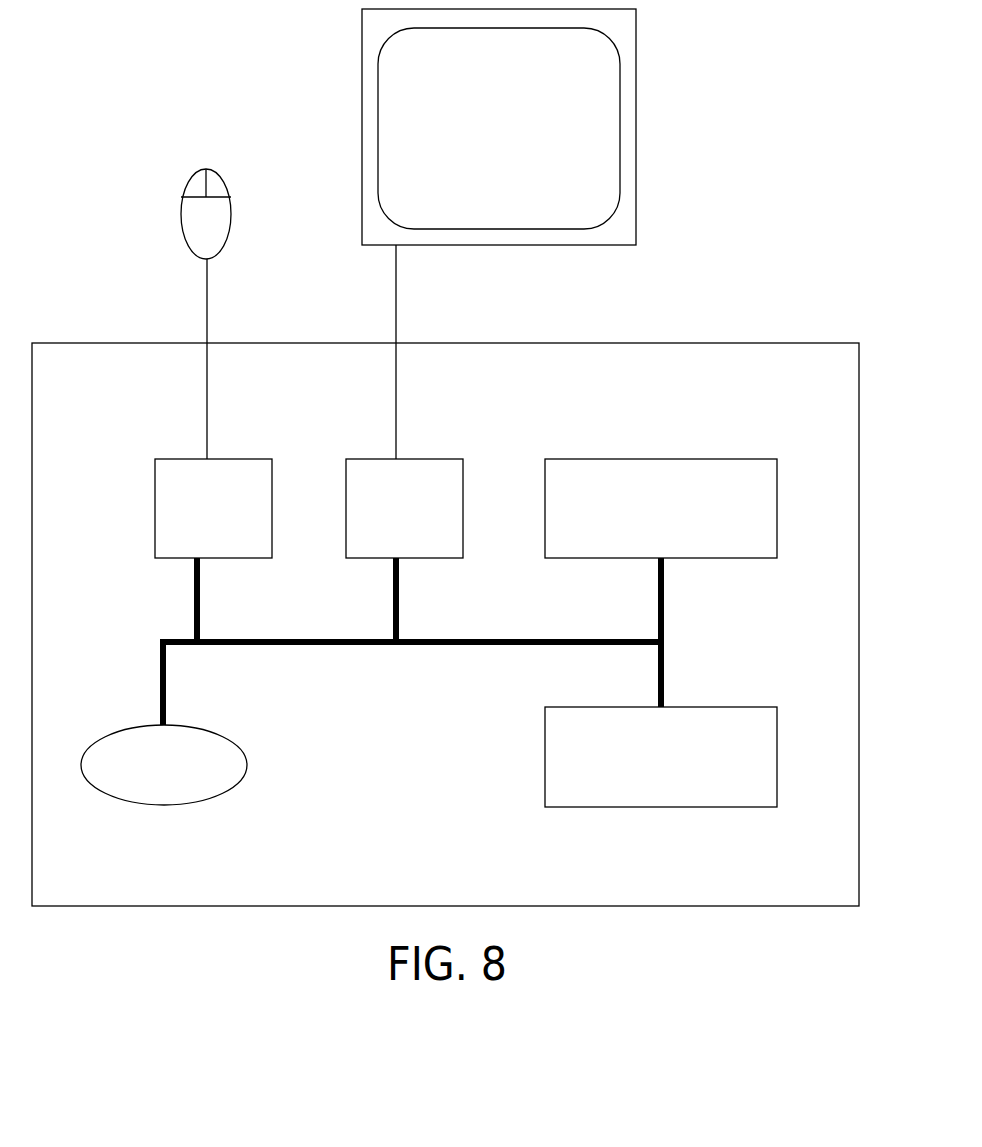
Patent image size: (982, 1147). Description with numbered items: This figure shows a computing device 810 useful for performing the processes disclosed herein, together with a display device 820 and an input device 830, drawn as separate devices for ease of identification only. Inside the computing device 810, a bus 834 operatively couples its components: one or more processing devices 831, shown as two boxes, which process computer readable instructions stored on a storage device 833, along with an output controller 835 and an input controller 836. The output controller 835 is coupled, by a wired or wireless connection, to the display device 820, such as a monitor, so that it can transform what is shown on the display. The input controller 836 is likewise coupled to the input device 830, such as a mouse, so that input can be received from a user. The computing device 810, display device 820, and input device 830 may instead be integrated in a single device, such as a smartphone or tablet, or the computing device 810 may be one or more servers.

The computing device 810 is at (680, 342).
The display device 820 is at (638, 173).
The input device 830 is at (226, 182).
The processing device 831 is at (697, 459).
The storage device 833 is at (250, 769).
The bus 834 is at (505, 637).
The output controller 835 is at (415, 459).
The input controller 836 is at (223, 459).